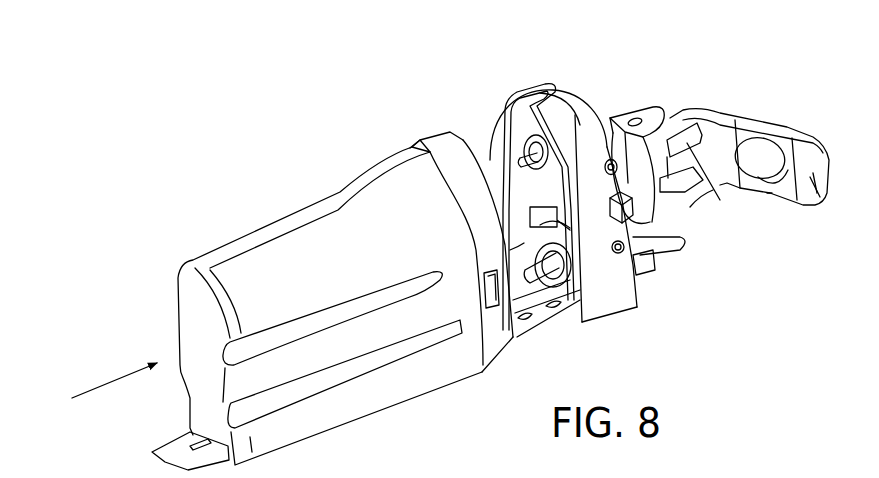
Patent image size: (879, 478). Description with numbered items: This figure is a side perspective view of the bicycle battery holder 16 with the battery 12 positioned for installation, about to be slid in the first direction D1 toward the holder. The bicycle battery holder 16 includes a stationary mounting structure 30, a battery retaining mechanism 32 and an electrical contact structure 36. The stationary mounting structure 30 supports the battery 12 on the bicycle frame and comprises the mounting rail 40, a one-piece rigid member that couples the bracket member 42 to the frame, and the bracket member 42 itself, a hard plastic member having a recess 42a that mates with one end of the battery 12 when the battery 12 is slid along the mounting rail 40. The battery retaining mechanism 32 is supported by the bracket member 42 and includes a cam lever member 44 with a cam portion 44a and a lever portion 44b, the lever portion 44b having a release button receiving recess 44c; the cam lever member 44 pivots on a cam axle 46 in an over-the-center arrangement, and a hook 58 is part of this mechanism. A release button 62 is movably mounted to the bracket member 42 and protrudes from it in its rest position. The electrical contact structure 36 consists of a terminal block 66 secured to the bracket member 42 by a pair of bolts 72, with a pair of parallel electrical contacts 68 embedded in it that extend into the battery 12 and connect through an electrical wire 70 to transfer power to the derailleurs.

The battery 12 is at (241, 239).
The bicycle battery holder 16 is at (804, 117).
The stationary mounting structure 30 is at (722, 290).
The battery retaining mechanism 32 is at (675, 99).
The electrical contact structure 36 is at (513, 192).
The mounting rail 40 is at (652, 280).
The bracket member 42 is at (613, 317).
The recess 42a is at (548, 129).
The cam lever member 44 is at (768, 125).
The cam portion 44a is at (690, 207).
The lever portion 44b is at (817, 174).
The release button receiving recess 44c is at (770, 195).
The cam axle 46 is at (636, 118).
The hook 58 is at (530, 228).
The release button 62 is at (608, 205).
The terminal block 66 is at (510, 250).
The electrical contacts 68 is at (489, 172).
The electrical wire 70 is at (665, 253).
The bolts 72 is at (609, 159).
The first direction D1 is at (108, 382).